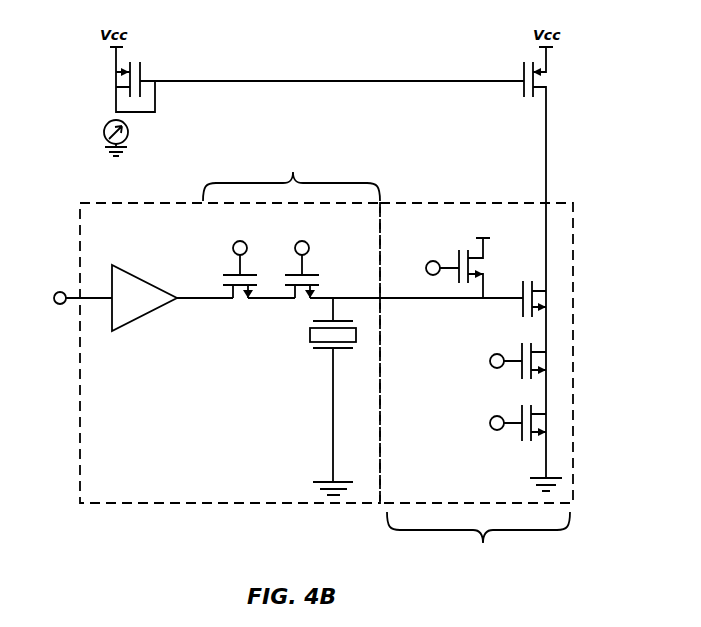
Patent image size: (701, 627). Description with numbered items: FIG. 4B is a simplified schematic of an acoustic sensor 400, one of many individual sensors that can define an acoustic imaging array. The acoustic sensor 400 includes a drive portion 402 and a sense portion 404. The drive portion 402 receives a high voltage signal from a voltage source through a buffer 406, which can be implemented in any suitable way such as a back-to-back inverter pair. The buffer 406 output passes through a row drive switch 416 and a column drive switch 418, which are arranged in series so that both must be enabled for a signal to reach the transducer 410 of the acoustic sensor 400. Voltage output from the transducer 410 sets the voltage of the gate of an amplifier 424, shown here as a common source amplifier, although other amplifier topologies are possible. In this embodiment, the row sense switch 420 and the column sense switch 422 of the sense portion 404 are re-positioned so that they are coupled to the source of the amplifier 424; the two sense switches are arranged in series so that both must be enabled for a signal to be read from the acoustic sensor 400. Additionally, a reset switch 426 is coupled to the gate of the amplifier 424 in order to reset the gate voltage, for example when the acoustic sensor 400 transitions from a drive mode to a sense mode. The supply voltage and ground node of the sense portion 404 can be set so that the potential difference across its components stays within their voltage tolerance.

The acoustic sensor 400 is at (80, 231).
The drive portion 402 is at (291, 220).
The sense portion 404 is at (500, 389).
The buffer 406 is at (149, 276).
The transducer 410 is at (311, 326).
The row drive switch 416 is at (242, 241).
The column drive switch 418 is at (304, 241).
The row sense switch 420 is at (490, 423).
The column sense switch 422 is at (490, 361).
The amplifier 424 is at (547, 297).
The reference transistor 426 is at (426, 268).